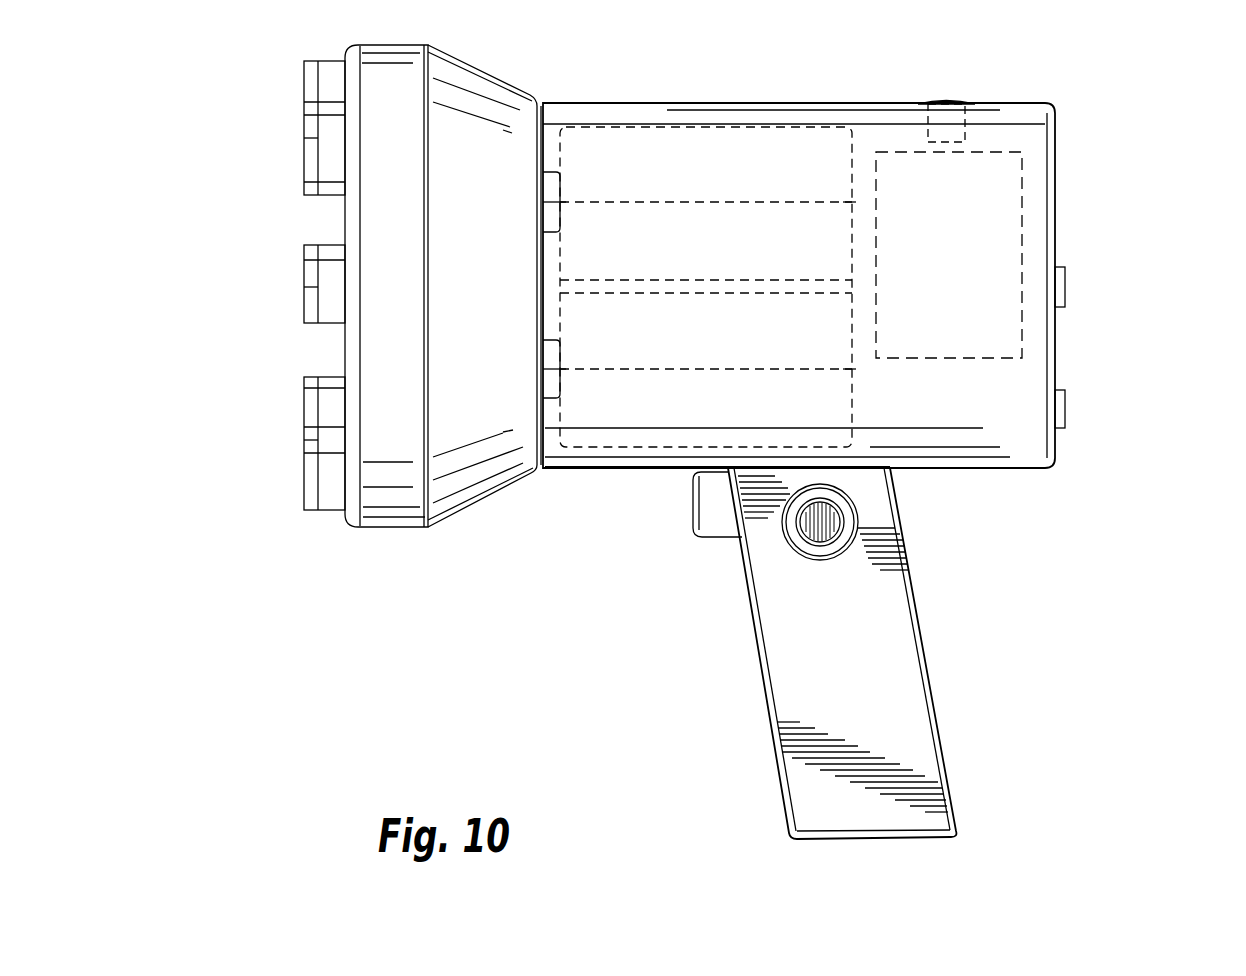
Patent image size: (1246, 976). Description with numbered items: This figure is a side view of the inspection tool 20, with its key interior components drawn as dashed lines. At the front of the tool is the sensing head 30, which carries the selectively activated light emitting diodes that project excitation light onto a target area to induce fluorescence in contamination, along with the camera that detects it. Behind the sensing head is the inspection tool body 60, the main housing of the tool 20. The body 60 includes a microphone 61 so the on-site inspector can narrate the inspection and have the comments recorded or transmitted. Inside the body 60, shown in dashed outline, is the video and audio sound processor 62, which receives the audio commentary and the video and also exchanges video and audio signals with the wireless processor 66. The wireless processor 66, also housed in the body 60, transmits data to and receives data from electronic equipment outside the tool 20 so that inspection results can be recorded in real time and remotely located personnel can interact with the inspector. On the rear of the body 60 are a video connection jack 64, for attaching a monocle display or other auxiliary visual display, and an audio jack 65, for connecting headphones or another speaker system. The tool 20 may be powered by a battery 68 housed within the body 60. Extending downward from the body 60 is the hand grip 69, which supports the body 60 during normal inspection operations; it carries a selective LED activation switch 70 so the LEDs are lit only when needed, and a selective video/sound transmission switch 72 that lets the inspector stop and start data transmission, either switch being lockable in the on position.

The inspection tool 20 is at (1103, 80).
The sensing head 30 is at (288, 219).
The inspection tool body 60 is at (964, 409).
The microphone 61 is at (944, 103).
The video and audio sound processor 62 is at (1000, 250).
The video connection jack 64 is at (1065, 288).
The audio jack 65 is at (1065, 405).
The wireless processor 66 is at (652, 150).
The battery 68 is at (610, 428).
The hand grip 69 is at (928, 680).
The selective LED activation switch 70 is at (722, 538).
The selective video/sound transmission switch 72 is at (820, 560).